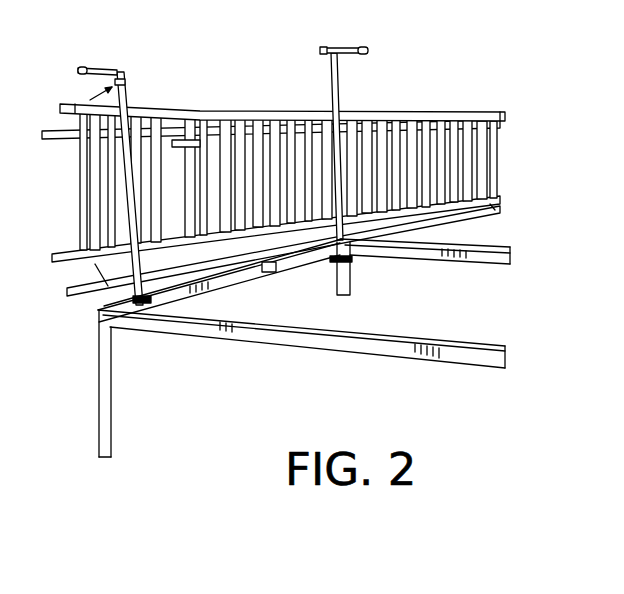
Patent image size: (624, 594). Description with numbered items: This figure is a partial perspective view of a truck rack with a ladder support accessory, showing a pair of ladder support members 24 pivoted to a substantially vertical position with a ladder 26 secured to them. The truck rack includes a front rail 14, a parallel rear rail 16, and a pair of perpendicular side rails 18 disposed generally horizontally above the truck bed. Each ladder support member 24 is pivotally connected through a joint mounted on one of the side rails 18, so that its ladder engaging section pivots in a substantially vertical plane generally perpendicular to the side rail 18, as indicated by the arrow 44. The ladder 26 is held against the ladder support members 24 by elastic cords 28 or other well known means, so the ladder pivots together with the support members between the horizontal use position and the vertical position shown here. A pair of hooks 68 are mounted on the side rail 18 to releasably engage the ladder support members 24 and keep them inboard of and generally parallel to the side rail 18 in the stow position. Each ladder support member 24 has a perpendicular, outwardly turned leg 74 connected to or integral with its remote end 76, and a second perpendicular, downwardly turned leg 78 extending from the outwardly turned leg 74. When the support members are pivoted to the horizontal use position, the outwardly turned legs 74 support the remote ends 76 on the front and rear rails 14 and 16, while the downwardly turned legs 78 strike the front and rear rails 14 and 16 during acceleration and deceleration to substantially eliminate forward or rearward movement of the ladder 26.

The front rail 14 is at (483, 245).
The rear rail 16 is at (337, 343).
The side rail 18 is at (268, 264).
The ladder support member 24 is at (117, 213).
The ladder 26 is at (462, 112).
The elastic cord 28 is at (82, 200).
The arrow 44 is at (367, 253).
The hook 68 is at (192, 287).
The outwardly turned leg 74 is at (111, 67).
The remote end 76 is at (126, 78).
The downwardly turned leg 78 is at (83, 67).